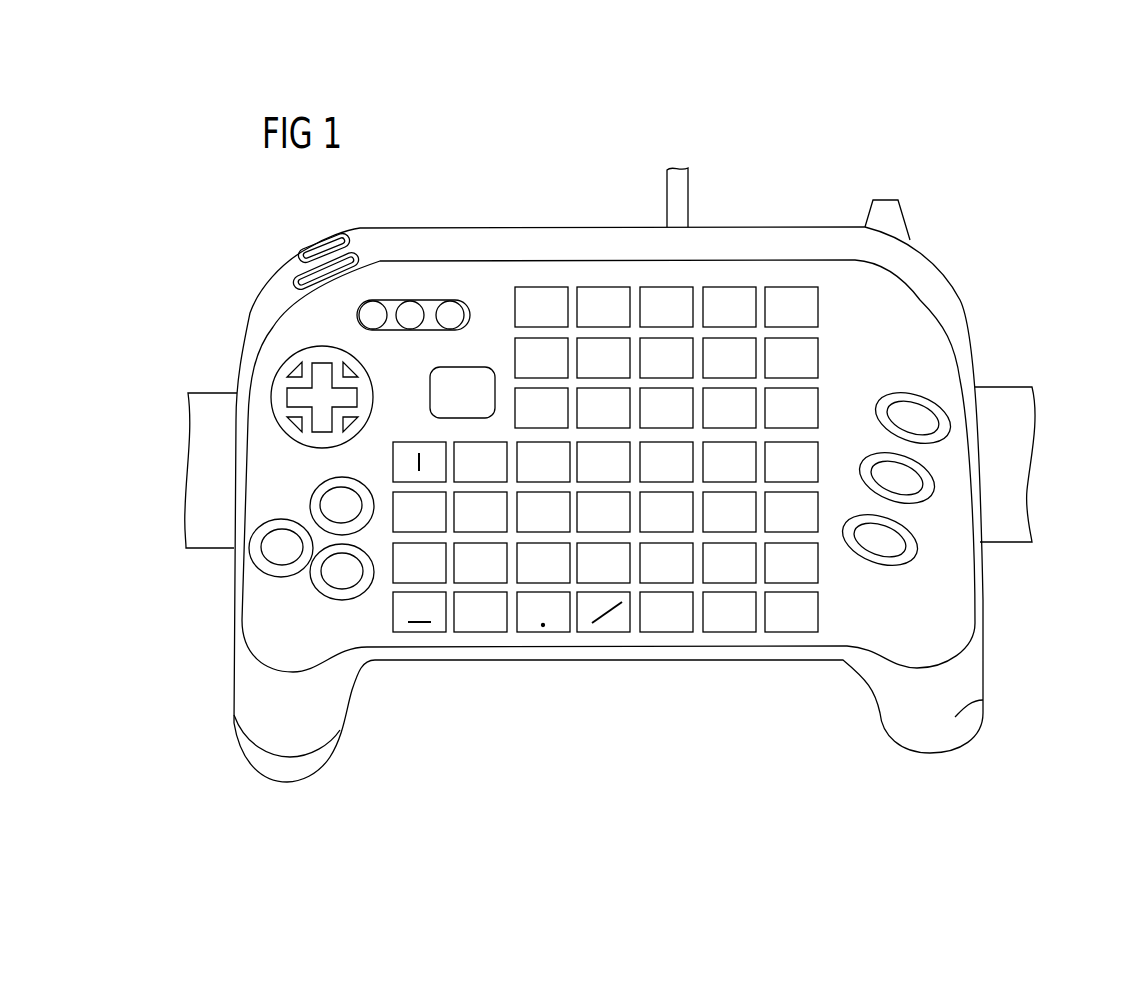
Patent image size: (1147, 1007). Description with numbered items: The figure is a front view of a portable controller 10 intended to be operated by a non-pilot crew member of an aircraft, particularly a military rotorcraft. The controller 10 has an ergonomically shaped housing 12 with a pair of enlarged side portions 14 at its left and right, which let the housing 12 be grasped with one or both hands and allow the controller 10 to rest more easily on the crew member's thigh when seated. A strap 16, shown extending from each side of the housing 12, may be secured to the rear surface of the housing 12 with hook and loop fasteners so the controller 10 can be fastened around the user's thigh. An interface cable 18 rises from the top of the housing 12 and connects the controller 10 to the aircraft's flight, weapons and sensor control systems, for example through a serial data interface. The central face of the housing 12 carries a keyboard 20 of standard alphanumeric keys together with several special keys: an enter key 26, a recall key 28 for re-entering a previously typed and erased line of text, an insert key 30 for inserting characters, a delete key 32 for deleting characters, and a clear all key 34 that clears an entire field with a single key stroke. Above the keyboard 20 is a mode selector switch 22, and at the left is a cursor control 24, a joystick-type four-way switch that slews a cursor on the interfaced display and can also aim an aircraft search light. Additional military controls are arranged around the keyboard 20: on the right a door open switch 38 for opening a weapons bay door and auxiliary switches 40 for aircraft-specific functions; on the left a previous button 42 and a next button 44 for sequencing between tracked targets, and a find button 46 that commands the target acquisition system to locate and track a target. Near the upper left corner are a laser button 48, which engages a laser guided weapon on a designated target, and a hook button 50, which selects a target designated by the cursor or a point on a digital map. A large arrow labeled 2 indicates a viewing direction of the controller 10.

The direction of view of FIG. 2 is at (1050, 470).
The portable controller 10 is at (948, 213).
The housing 12 is at (620, 222).
The enlarged side portions 14 is at (253, 700).
The strap 16 is at (212, 540).
The interface cable 18 is at (685, 188).
The keyboard 20 is at (845, 360).
The mode selector switch 22 is at (436, 266).
The cursor control 24 is at (288, 373).
The enter key 26 is at (432, 375).
The recall key 28 is at (541, 287).
The insert key 30 is at (515, 345).
The delete key 32 is at (515, 420).
The clear all key 34 is at (793, 632).
The door open switch 38 is at (935, 405).
The auxiliary switches 40 is at (898, 556).
The previous button 42 is at (320, 497).
The next button 44 is at (320, 578).
The find button 46 is at (258, 555).
The laser button 48 is at (330, 243).
The hook button 50 is at (305, 270).